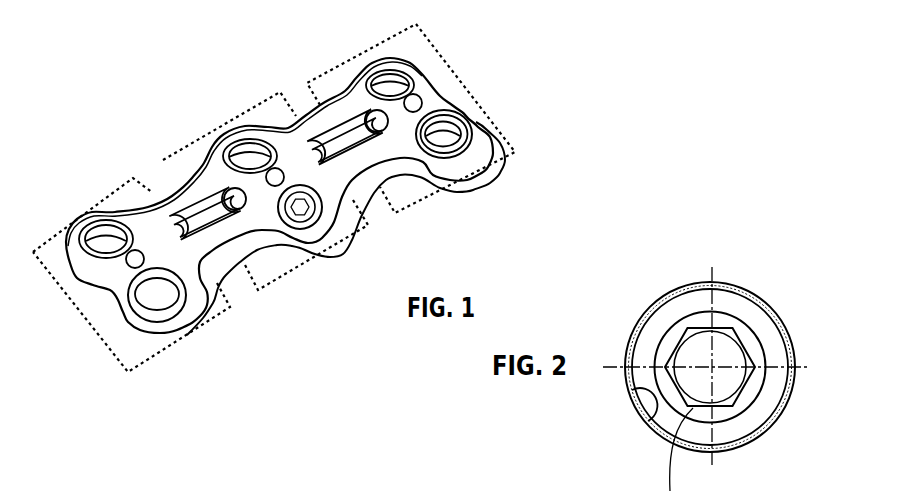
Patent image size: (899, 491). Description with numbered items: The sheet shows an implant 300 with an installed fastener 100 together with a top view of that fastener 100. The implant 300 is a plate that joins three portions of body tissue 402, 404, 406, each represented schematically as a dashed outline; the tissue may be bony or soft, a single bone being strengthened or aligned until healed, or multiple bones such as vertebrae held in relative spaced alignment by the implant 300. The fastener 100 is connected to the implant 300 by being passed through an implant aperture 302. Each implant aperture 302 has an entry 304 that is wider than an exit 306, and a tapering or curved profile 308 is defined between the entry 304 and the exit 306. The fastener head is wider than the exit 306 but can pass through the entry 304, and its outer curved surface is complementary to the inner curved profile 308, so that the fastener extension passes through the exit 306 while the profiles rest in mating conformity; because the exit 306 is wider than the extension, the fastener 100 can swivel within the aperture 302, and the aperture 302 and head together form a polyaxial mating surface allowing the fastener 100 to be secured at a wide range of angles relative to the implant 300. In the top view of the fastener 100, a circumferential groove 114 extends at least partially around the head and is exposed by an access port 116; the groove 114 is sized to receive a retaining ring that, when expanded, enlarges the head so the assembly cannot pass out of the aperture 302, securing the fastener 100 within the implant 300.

In FIG. 1, the fastener 100 is at (316, 222).
In FIG. 2, the fastener 100 is at (737, 277).
In FIG. 2, the circumferential groove 114 is at (653, 441).
In FIG. 2, the access port 116 is at (636, 406).
In FIG. 1, the implant 300 is at (432, 62).
In FIG. 1, the implant aperture 302 is at (153, 293).
In FIG. 1, the entry 304 is at (455, 135).
In FIG. 1, the exit 306 is at (462, 110).
In FIG. 1, the curved profile 308 is at (420, 122).
In FIG. 1, the body tissue 402 is at (480, 91).
In FIG. 1, the body tissue 404 is at (268, 294).
In FIG. 1, the body tissue 406 is at (204, 334).